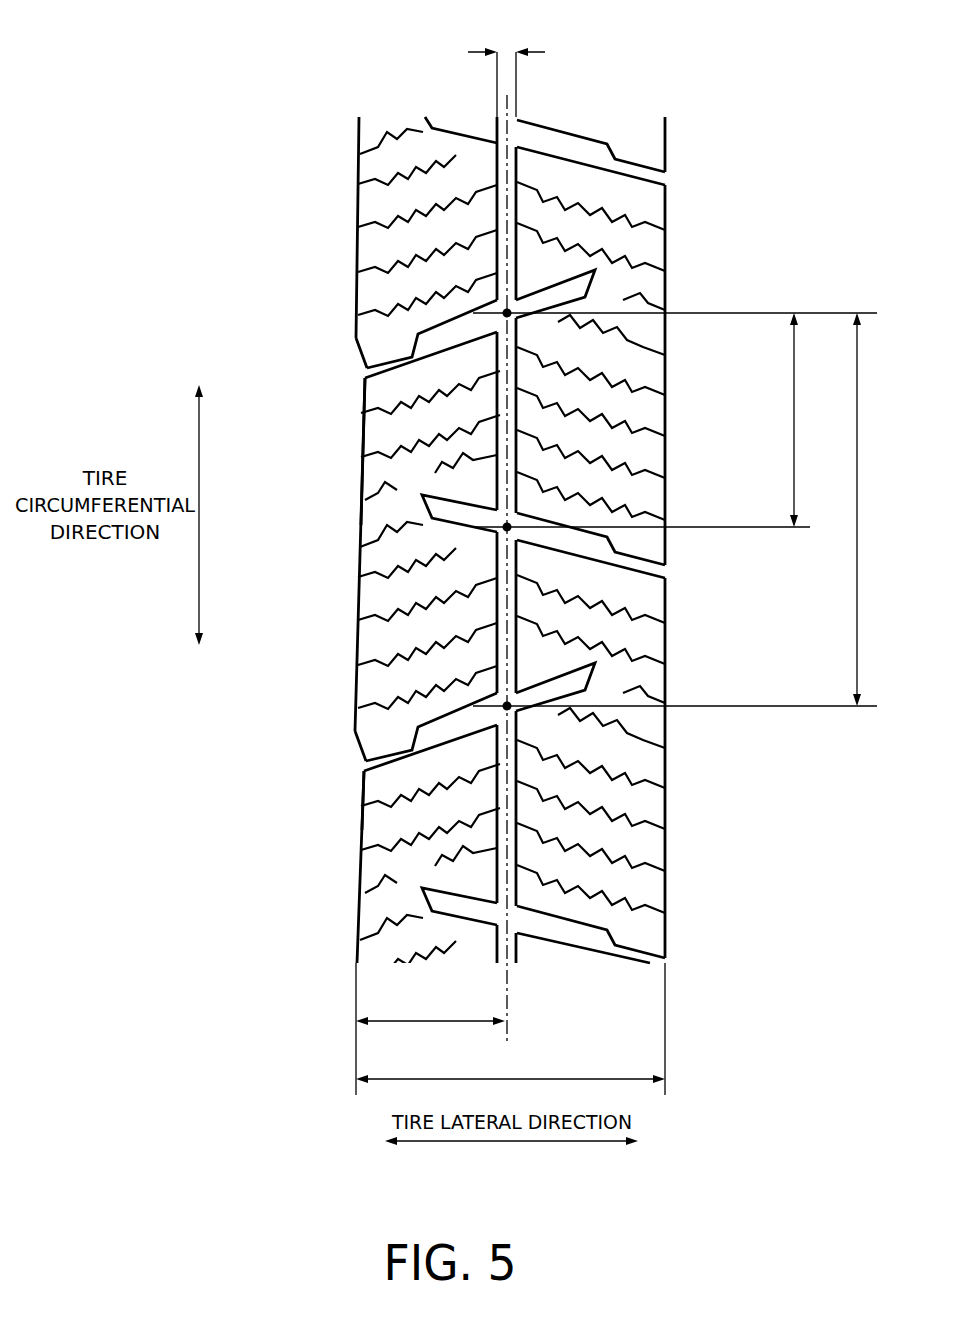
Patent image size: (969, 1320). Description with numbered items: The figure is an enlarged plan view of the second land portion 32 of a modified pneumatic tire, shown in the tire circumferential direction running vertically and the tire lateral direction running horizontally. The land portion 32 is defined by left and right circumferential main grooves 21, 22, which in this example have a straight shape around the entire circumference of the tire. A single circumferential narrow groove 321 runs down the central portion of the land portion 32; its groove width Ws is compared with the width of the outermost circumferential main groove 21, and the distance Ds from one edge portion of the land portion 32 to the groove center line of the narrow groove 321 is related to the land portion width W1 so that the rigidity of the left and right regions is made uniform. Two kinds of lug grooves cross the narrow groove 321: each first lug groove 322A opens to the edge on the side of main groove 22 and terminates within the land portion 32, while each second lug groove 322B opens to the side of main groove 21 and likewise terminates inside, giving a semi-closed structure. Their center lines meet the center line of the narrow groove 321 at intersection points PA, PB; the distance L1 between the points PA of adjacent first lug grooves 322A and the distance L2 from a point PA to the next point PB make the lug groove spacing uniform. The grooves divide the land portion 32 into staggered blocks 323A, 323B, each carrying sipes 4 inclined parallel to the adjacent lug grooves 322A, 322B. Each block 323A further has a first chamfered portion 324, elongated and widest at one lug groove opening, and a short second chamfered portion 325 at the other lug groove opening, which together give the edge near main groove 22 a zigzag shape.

The sipe 4 is at (360, 578).
The circumferential main groove 21 is at (680, 159).
The circumferential main groove 22 is at (342, 149).
The second land portion 32 is at (504, 505).
The circumferential narrow groove 321 is at (498, 174).
The first lug groove 322A is at (430, 342).
The second lug groove 322B is at (598, 545).
The block 323A is at (357, 483).
The block 323B is at (668, 291).
The first chamfered portion 324 is at (360, 404).
The second chamfered portion 325 is at (366, 765).
The intersection point PA is at (503, 312).
The intersection point PB is at (503, 527).
The distance L1 is at (869, 509).
The distance L2 is at (807, 420).
The groove width Ws is at (506, 38).
The distance Ds is at (430, 1029).
The width W1 is at (510, 1029).